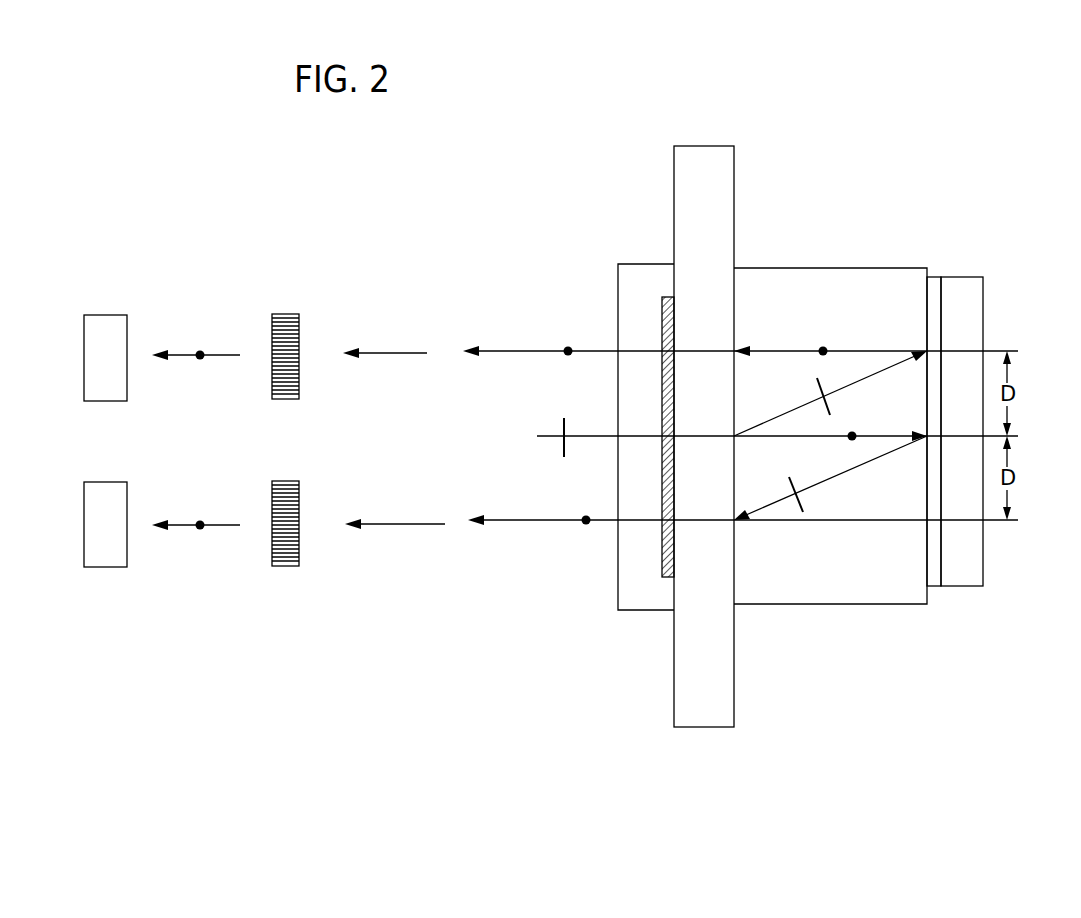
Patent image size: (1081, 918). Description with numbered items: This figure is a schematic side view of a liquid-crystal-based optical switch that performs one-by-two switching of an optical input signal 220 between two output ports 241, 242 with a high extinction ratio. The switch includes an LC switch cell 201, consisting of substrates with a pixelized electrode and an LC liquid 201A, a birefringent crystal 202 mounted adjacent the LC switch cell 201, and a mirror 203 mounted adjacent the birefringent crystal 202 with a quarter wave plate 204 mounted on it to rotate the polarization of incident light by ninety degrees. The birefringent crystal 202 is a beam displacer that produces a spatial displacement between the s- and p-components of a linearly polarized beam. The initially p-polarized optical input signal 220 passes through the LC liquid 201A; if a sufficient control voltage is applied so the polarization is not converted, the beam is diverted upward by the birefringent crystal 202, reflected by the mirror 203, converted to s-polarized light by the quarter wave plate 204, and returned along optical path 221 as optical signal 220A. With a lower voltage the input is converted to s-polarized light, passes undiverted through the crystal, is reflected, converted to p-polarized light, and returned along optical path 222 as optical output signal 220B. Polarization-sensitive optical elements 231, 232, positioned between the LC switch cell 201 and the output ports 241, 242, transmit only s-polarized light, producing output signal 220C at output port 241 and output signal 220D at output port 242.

The LC switch cell 201 is at (682, 146).
The LC liquid 201A is at (662, 312).
The birefringent crystal 202 is at (855, 268).
The mirror 203 is at (968, 277).
The quarter wave plate 204 is at (940, 277).
The optical input signal 220 is at (547, 440).
The optical signal 220A is at (517, 352).
The optical output signal 220B is at (533, 525).
The output signal 220C is at (223, 353).
The output signal 220D is at (223, 527).
The optical path 221 is at (391, 353).
The optical path 222 is at (392, 527).
The polarization-sensitive optical element 231 is at (283, 314).
The polarization-sensitive optical element 232 is at (286, 566).
The output port 241 is at (103, 315).
The output port 242 is at (105, 567).